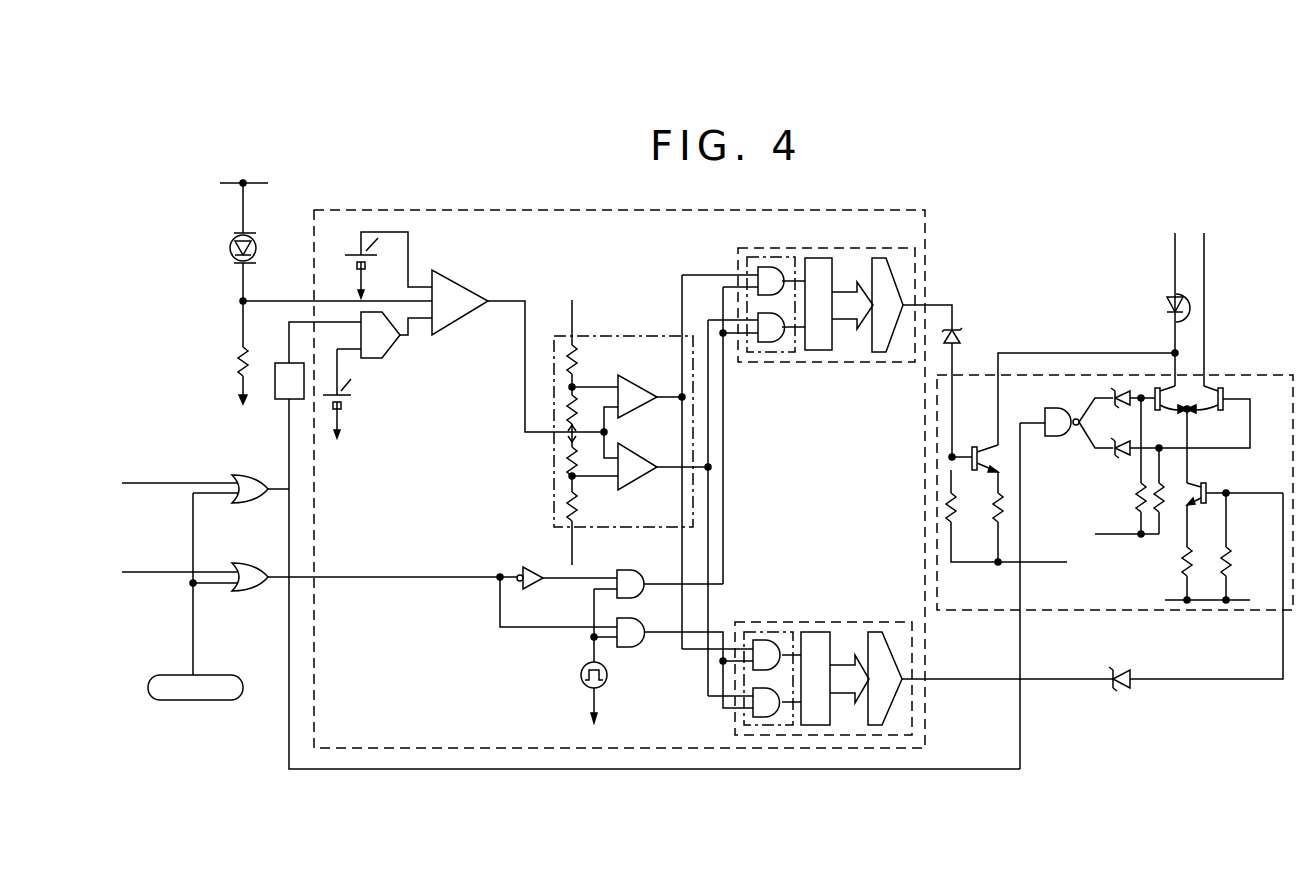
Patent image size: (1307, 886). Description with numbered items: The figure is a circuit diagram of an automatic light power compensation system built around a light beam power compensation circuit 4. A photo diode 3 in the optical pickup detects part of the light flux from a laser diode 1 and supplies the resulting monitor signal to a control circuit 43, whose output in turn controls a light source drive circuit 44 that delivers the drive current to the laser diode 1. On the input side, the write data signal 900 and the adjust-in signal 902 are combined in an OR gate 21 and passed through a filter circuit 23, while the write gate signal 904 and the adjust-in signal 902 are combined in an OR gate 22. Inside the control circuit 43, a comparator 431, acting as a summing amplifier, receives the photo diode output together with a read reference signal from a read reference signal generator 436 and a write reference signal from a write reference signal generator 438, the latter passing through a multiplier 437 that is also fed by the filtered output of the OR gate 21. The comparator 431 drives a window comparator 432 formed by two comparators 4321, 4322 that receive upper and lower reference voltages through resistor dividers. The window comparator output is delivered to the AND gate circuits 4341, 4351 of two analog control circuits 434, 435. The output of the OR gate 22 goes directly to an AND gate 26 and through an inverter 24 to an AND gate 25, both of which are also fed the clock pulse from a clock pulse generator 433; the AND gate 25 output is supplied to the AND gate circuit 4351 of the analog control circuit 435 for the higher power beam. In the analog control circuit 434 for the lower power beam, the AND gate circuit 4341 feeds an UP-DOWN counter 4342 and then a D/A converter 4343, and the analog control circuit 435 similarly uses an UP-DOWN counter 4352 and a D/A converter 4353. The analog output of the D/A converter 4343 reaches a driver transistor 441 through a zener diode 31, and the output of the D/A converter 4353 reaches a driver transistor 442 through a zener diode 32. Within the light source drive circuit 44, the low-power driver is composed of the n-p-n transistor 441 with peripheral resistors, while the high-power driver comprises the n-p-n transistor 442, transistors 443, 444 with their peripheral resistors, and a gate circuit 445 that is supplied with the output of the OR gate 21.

The light beam power compensation circuit 4 is at (1033, 189).
The photo diode 3 is at (229, 248).
The laser diode 1 is at (1168, 293).
The filter circuit 23 is at (275, 386).
The OR gate 21 is at (240, 475).
The OR gate 22 is at (240, 591).
The write data signal 900 is at (156, 474).
The write gate signal 904 is at (155, 562).
The adjust-in signal 902 is at (195, 700).
The control circuit 43 is at (697, 210).
The comparator 431 is at (456, 283).
The read reference signal generator 436 is at (346, 256).
The multiplier 437 is at (379, 359).
The write reference signal generator 438 is at (355, 403).
The window comparator 432 is at (622, 336).
The comparator 4321 is at (643, 384).
The comparator 4322 is at (645, 454).
The inverter 24 is at (531, 568).
The AND gate 25 is at (630, 570).
The AND gate 26 is at (628, 647).
The clock pulse generator 433 is at (581, 675).
The analog control circuit 434 is at (880, 362).
The AND gate circuit 4341 is at (769, 257).
The UP-DOWN counter 4342 is at (818, 352).
The D/A converter 4343 is at (877, 258).
The analog control circuit 435 is at (735, 728).
The AND gate circuit 4351 is at (760, 632).
The UP-DOWN counter 4352 is at (818, 632).
The D/A converter 4353 is at (876, 632).
The zener diode 31 is at (960, 304).
The zener diode 32 is at (1120, 692).
The light source drive circuit 44 is at (1115, 612).
The driver transistor 441 is at (980, 447).
The driver transistor 442 is at (1207, 485).
The transistor 443 is at (1157, 388).
The transistor 444 is at (1222, 388).
The gate circuit 445 is at (1057, 408).